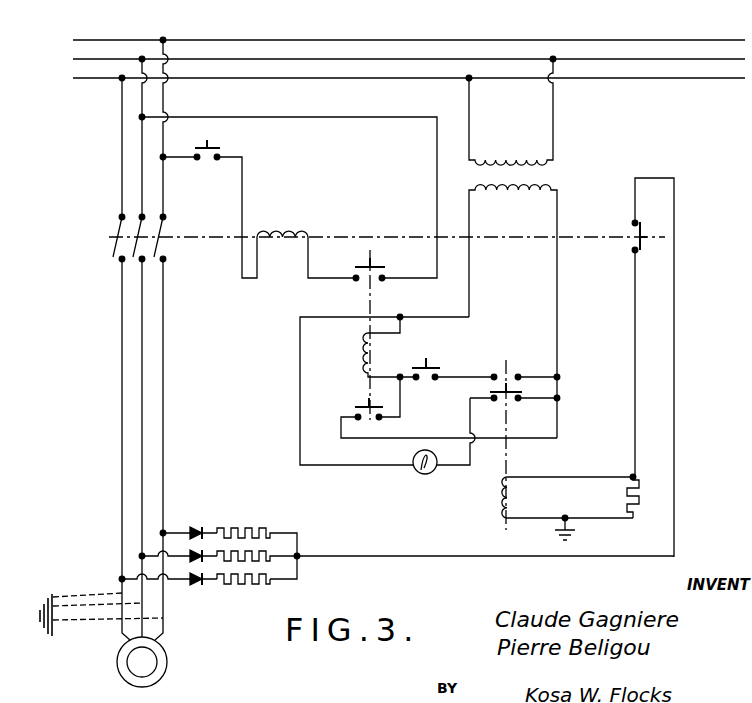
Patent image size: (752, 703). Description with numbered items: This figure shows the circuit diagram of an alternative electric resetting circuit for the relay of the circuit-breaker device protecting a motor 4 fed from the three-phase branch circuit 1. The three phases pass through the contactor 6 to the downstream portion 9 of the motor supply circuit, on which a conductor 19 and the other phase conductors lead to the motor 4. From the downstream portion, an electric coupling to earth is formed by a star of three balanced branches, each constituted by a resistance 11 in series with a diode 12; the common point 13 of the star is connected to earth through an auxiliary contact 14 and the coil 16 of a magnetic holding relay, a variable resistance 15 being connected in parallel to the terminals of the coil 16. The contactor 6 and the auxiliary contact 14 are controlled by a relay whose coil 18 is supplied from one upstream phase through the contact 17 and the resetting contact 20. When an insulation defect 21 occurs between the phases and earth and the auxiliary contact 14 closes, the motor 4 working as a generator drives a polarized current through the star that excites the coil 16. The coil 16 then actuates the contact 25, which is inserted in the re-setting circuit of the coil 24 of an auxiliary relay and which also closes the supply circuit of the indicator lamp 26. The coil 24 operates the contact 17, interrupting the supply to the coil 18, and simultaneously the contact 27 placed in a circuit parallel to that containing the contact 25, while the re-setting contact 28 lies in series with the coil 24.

The branch circuit 1 is at (392, 50).
The motor 4 is at (150, 660).
The contactor 6 is at (369, 239).
The downstream portion of the supply circuit 9 is at (142, 327).
The resistance 11 is at (272, 577).
The diode 12 is at (190, 575).
The common point 13 is at (299, 556).
The auxiliary contact 14 is at (640, 246).
The variable resistance 15 is at (640, 513).
The coil of magnetic holding relay 16 is at (509, 514).
The contactor 17 is at (372, 271).
The coil 18 is at (282, 234).
The supply conductor 19 is at (142, 138).
The resetting contactor 20 is at (214, 145).
The insulation defect 21 is at (78, 626).
The coil of auxiliary relay 24 is at (364, 355).
The contact 25 is at (515, 436).
The indicator lamp 26 is at (417, 471).
The contact 27 is at (357, 406).
The re-setting contact 28 is at (428, 367).